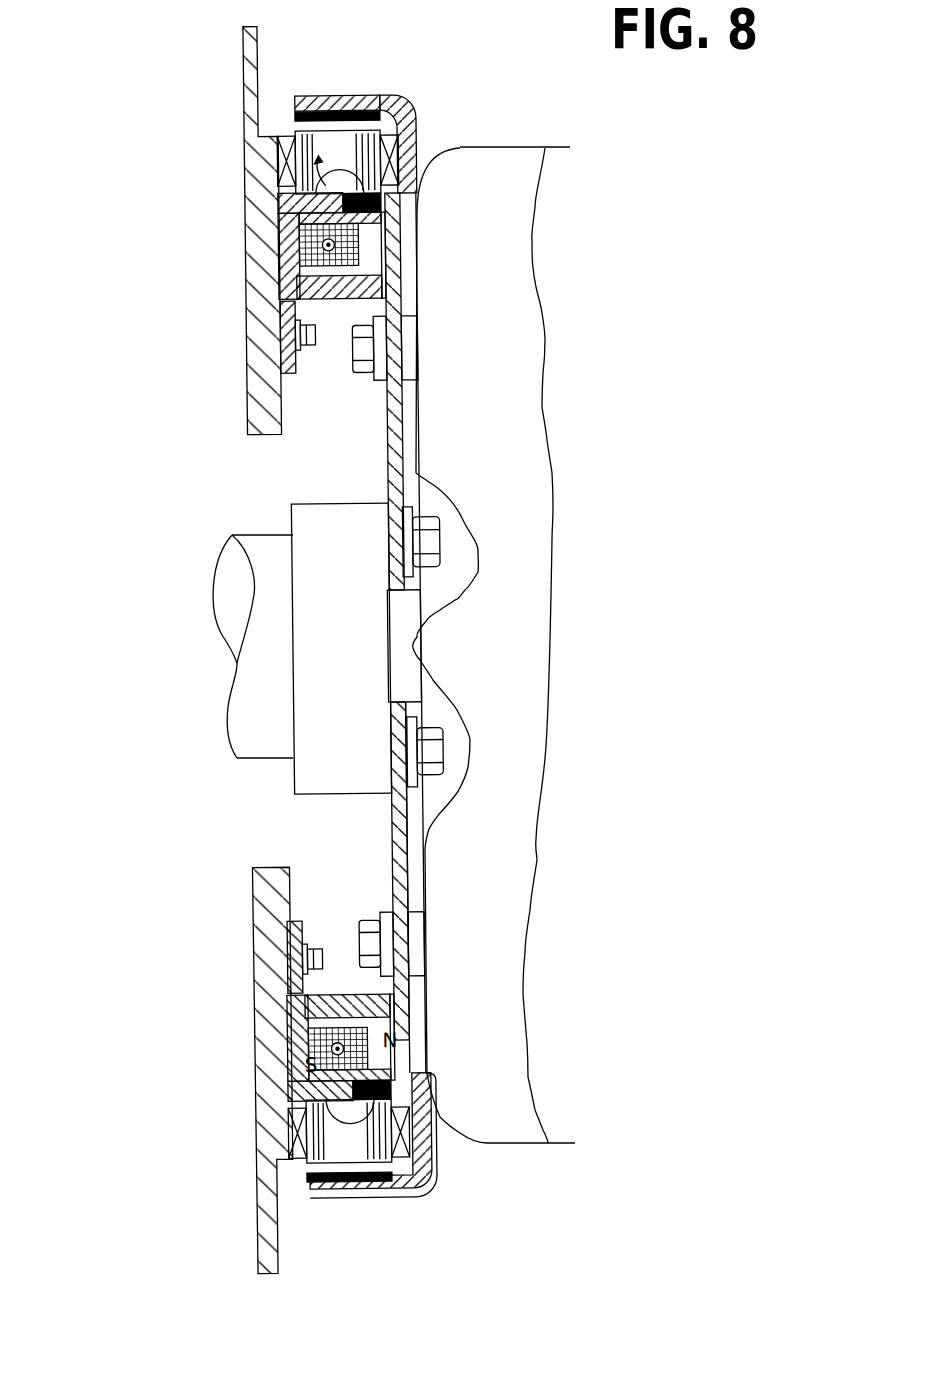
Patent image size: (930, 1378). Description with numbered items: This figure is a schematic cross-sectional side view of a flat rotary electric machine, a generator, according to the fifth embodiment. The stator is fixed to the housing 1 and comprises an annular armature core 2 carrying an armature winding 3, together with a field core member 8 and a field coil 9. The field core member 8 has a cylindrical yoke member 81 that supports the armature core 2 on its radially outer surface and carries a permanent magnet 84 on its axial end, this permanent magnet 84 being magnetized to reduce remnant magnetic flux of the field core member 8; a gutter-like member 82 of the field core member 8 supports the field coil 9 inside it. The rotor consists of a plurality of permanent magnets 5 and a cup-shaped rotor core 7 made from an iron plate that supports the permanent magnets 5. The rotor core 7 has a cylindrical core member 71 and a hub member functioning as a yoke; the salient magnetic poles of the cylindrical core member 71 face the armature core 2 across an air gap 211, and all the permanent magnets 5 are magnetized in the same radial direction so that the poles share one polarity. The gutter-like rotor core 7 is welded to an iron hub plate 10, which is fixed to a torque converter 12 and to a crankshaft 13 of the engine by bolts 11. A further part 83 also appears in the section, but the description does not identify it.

The housing 1 is at (292, 152).
The annular armature core 2 is at (290, 153).
The armature winding 3 is at (290, 172).
The permanent magnets 5 is at (317, 97).
The cup-shaped rotor core 7 is at (342, 199).
The cylindrical core member 71 is at (387, 100).
The field core member 8 is at (298, 252).
The cylindrical yoke member 81 is at (368, 220).
The gutter-like member 82 is at (357, 279).
The bracket 83 is at (290, 328).
The permanent magnet 84 is at (290, 208).
The field coil 9 is at (300, 236).
The iron hub plate 10 is at (393, 460).
The bolts 11 is at (432, 538).
The torque converter 12 is at (453, 863).
The crankshaft 13 is at (307, 772).
The air gap 211 is at (295, 129).